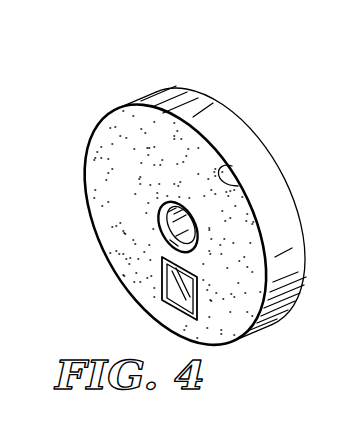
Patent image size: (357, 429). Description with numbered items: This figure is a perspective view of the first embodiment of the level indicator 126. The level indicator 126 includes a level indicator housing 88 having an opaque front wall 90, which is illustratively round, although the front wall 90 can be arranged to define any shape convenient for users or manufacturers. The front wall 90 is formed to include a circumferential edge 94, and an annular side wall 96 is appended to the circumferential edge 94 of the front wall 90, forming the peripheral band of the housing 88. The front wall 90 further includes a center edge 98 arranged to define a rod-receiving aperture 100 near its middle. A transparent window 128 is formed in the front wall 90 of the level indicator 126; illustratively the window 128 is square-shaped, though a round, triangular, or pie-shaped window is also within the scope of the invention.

The level indicator housing 88 is at (147, 97).
The opaque front wall 90 is at (92, 148).
The level indicator 126 is at (116, 95).
The annular side wall 96 is at (230, 127).
The circumferential edge 94 is at (240, 182).
The rod-receiving aperture 100 is at (158, 226).
The center edge 98 is at (167, 234).
The transparent window 128 is at (163, 288).